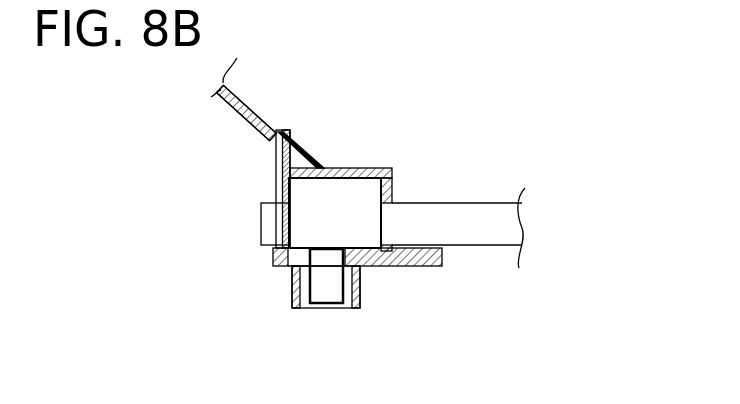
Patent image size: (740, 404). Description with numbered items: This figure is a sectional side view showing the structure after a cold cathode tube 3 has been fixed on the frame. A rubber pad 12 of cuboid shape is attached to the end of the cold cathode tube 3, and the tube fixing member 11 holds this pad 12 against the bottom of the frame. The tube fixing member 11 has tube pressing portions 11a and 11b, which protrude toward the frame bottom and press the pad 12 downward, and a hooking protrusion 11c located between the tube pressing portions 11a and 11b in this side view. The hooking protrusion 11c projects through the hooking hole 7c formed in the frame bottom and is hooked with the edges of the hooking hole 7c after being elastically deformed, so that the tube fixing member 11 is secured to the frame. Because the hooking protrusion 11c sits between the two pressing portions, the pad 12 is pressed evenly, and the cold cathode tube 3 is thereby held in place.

The tube fixing member 11 is at (303, 132).
The tube pressing portion 11a is at (393, 186).
The tube pressing portion 11b is at (276, 175).
The hooking protrusion 11c is at (332, 292).
The pad 12 is at (367, 167).
The hooking hole 7c is at (360, 291).
The cold cathode tube 3 is at (481, 231).